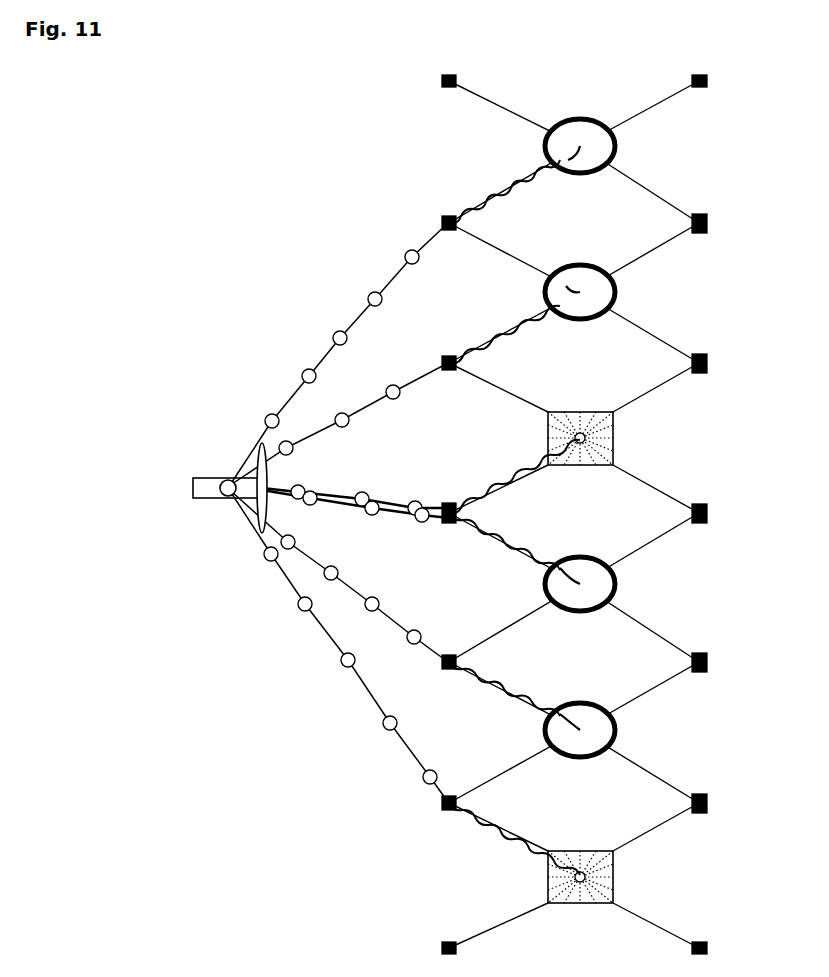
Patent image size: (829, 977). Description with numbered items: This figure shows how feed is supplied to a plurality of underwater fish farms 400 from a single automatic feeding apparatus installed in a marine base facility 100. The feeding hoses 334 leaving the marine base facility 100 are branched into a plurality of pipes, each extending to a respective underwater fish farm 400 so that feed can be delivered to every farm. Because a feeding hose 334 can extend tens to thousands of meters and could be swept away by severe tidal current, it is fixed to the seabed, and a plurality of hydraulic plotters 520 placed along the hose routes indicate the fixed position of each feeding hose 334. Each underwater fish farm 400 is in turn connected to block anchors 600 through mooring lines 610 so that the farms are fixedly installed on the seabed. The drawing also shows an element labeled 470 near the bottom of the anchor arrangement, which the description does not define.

The marine base facility 100 is at (200, 532).
The feeding hose 334 is at (327, 352).
The underwater fish farm 400 is at (629, 145).
The terminal node 470 is at (708, 948).
The hydraulic plotter 520 is at (368, 293).
The block anchor 600 is at (441, 81).
The mooring line 610 is at (675, 338).